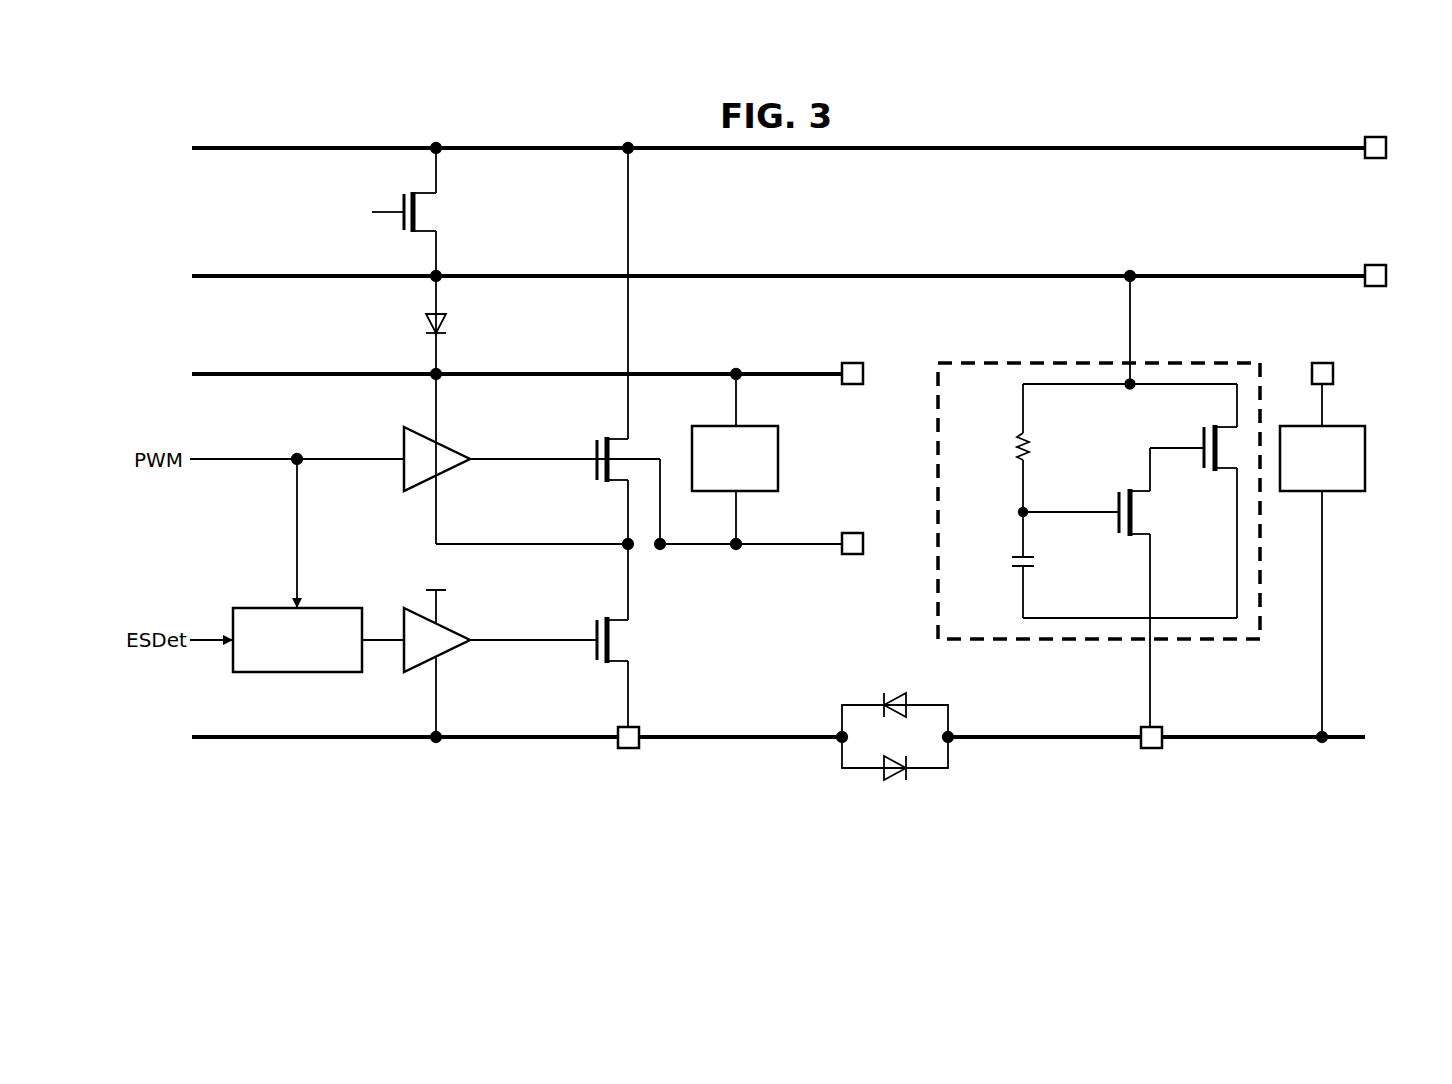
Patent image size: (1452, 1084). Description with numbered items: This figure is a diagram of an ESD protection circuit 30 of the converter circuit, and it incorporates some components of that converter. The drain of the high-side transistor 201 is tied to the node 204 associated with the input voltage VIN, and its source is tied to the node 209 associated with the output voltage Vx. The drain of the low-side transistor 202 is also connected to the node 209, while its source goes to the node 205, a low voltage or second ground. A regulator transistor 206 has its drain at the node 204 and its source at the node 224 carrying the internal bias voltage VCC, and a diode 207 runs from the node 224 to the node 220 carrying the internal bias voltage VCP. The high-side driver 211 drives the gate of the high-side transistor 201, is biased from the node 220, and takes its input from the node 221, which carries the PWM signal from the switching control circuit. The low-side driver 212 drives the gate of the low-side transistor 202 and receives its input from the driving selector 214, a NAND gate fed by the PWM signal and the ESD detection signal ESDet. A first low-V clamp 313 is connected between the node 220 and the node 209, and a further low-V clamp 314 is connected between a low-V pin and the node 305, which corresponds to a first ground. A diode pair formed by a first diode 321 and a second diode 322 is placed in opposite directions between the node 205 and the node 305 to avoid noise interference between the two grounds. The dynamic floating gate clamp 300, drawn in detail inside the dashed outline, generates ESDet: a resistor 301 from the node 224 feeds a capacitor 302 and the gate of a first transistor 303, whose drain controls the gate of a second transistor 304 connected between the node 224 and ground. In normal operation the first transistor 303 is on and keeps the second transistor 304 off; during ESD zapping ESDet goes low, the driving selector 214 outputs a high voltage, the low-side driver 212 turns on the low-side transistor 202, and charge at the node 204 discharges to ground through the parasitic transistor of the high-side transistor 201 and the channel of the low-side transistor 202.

The ESD protection circuit 30 is at (1192, 120).
The regulator transistor 206 is at (402, 204).
The diode 207 is at (428, 326).
The node 204 is at (624, 158).
The node 224 is at (1134, 270).
The node 220 is at (732, 368).
The node 221 is at (294, 454).
The high-side driver 211 is at (456, 456).
The high-side transistor 201 is at (594, 450).
The node 209 is at (626, 550).
The first low-V clamp 313 is at (780, 462).
The driving selector 214 is at (286, 674).
The low-side driver 212 is at (452, 655).
The low-side transistor 202 is at (596, 648).
The node 205 is at (618, 750).
The first diode 321 is at (897, 695).
The second diode 322 is at (897, 776).
The dynamic floating gate clamp 300 is at (1101, 545).
The resistor 301 is at (1030, 444).
The capacitor 302 is at (1036, 565).
The first transistor 303 is at (1117, 524).
The second transistor 304 is at (1202, 438).
The node 305 is at (1162, 750).
The further low-V clamp 314 is at (1367, 462).